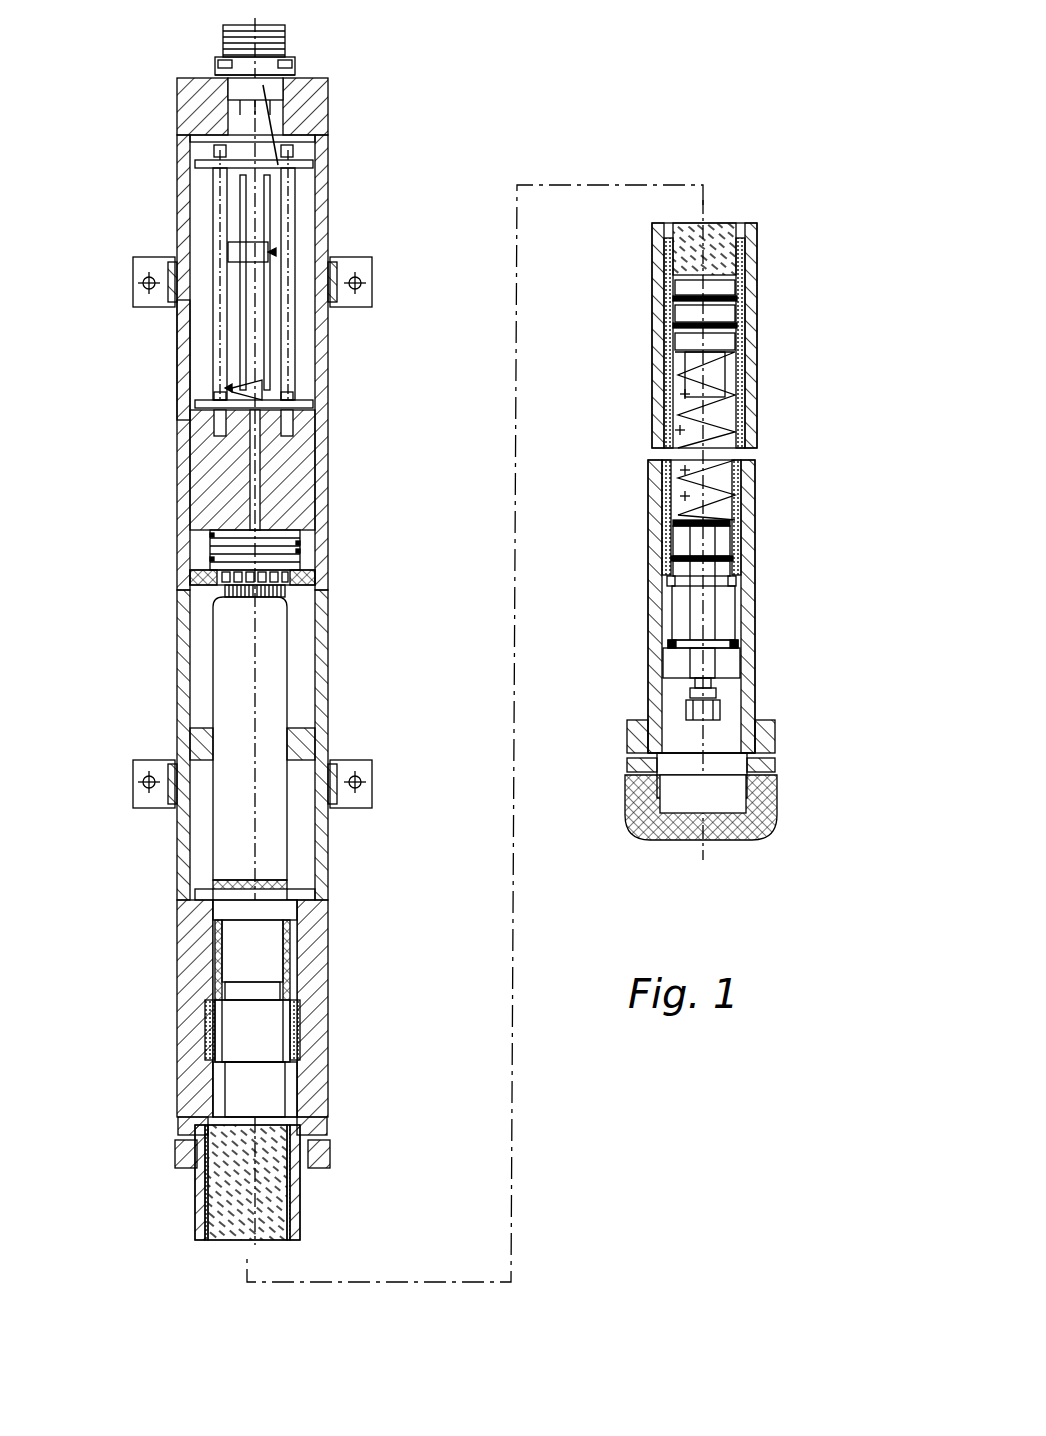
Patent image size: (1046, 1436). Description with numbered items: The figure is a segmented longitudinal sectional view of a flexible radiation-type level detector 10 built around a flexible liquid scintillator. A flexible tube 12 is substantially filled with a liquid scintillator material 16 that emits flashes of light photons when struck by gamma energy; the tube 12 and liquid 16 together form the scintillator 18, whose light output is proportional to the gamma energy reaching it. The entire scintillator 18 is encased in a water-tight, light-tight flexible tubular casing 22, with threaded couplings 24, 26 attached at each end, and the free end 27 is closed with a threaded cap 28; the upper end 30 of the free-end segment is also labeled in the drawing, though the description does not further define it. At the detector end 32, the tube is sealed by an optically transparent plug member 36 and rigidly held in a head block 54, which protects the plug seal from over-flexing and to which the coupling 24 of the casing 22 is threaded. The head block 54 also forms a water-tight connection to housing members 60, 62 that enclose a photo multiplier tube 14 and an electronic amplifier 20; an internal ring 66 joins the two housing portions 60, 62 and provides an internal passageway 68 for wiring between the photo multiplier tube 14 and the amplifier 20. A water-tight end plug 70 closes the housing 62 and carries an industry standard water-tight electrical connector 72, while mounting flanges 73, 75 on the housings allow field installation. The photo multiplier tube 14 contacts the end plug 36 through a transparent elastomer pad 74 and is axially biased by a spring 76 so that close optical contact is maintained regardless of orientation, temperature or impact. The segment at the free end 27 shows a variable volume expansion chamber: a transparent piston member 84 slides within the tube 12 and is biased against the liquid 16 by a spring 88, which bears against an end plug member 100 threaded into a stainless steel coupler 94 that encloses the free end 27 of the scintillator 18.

The flexible radiation-type level detector 10 is at (76, 603).
The flexible tube 12 is at (198, 1214).
The photo multiplier tube 14 is at (270, 696).
The liquid scintillator material 16 is at (265, 1222).
The scintillator 18 is at (126, 1186).
The electronic amplifier 20 is at (303, 226).
The flexible tubular casing 22 is at (300, 1233).
The threaded coupling 24 is at (333, 1143).
The threaded coupling 26 is at (790, 727).
The free end 27 is at (812, 768).
The threaded cap 28 is at (772, 822).
The upper end of tube 30 is at (745, 229).
The detector end 32 is at (158, 1135).
The optically transparent plug member 36 is at (235, 965).
The head block 54 is at (310, 1002).
The photo multiplier tube housing 60 is at (320, 602).
The housing member 62 is at (323, 352).
The internal ring 66 is at (315, 470).
The internal passageway 68 is at (235, 460).
The water tight end plug 70 is at (312, 82).
The water tight electrical connector 72 is at (222, 42).
The mounting flange 73 is at (362, 270).
The transparent elastomer pad 74 is at (287, 890).
The mounting flange 75 is at (146, 773).
The spring 76 is at (210, 556).
The piston member 84 is at (688, 305).
The spring 88 is at (742, 428).
The coupler 94 is at (652, 606).
The end plug member 100 is at (735, 665).